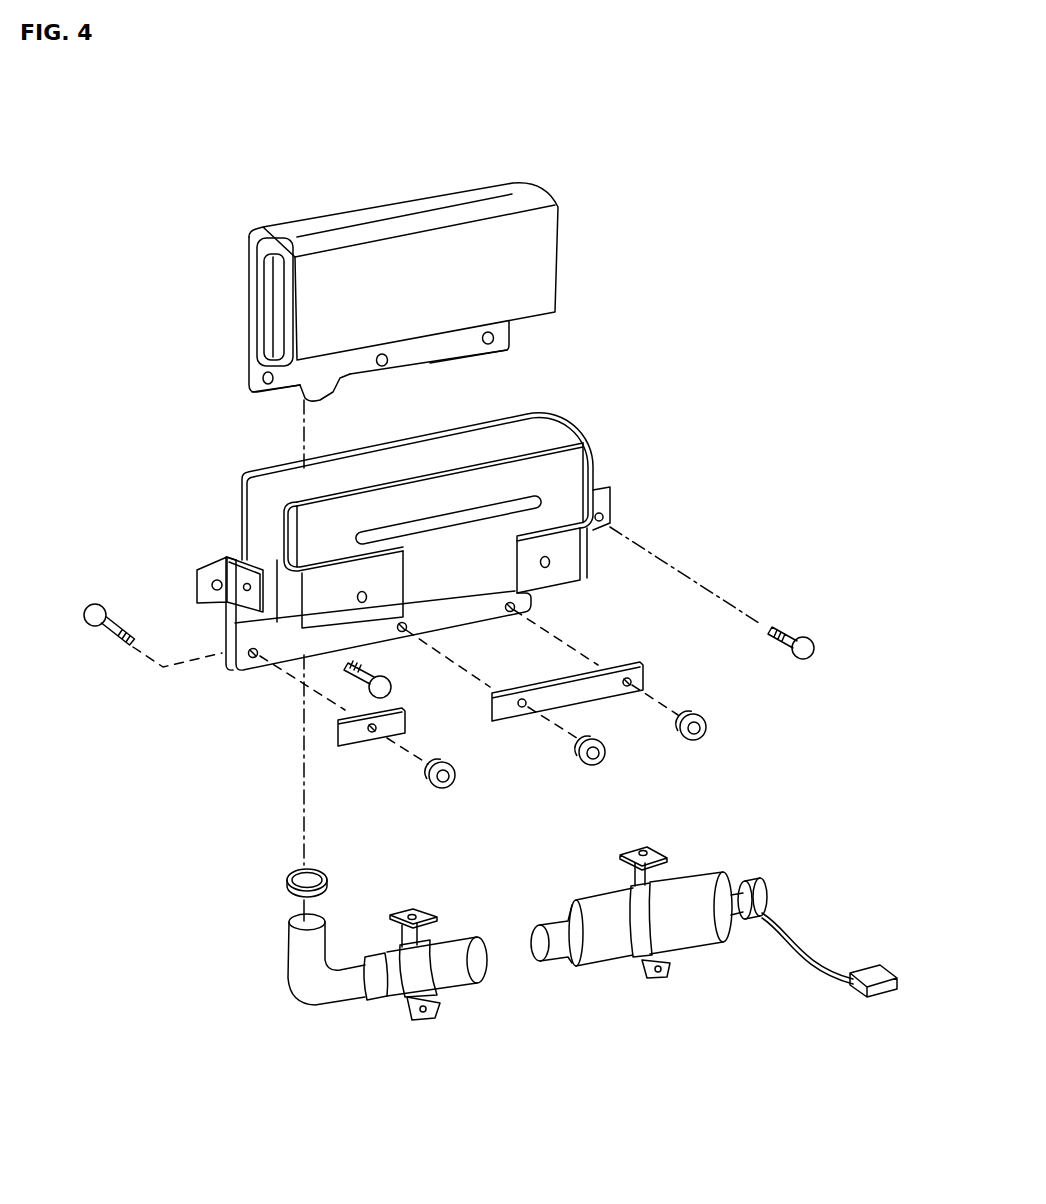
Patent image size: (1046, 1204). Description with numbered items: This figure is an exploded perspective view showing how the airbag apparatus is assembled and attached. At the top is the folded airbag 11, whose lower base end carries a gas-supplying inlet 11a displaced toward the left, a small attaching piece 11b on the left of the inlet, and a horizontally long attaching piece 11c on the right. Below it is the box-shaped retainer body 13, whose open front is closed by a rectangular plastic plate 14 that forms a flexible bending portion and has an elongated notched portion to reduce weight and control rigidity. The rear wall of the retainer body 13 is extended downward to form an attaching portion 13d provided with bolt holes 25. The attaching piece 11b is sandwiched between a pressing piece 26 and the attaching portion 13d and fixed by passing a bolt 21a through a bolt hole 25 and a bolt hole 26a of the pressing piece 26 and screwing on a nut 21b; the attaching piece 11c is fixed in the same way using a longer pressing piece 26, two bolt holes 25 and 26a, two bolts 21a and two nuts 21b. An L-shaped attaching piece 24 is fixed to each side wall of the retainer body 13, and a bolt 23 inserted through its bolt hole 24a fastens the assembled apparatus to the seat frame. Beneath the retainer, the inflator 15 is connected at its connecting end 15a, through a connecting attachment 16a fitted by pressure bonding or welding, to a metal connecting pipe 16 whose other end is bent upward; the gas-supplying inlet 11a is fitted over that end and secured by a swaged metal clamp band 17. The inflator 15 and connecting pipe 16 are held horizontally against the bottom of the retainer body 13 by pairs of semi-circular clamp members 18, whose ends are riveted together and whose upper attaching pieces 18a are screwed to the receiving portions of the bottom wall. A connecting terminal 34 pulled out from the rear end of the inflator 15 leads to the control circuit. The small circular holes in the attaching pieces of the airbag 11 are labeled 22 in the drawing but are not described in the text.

The airbag 11 is at (400, 212).
The gas-supplying inlet 11a is at (305, 410).
The attaching piece 11b is at (250, 378).
The attaching piece 11c is at (468, 339).
The cover mounting holes 22 is at (385, 363).
The retainer body 13 is at (388, 443).
The attaching portion 13d is at (225, 665).
The plastic plate 14 is at (457, 470).
The attaching piece 24 is at (220, 557).
The bolt hole 24a is at (213, 582).
The bolt hole 25 is at (257, 658).
The bolt 21a is at (92, 603).
The nut 21b is at (453, 785).
The bolt 23 is at (392, 688).
The pressing piece 26 is at (348, 735).
The bolt hole 26a is at (373, 734).
The clamp band 17 is at (287, 882).
The connecting pipe 16 is at (335, 995).
The connecting attachment 16a is at (467, 978).
The clamp member 18 is at (398, 937).
The attaching piece 18a is at (413, 910).
The inflator 15 is at (702, 925).
The connecting end 15a is at (555, 945).
The connecting terminal 34 is at (878, 995).